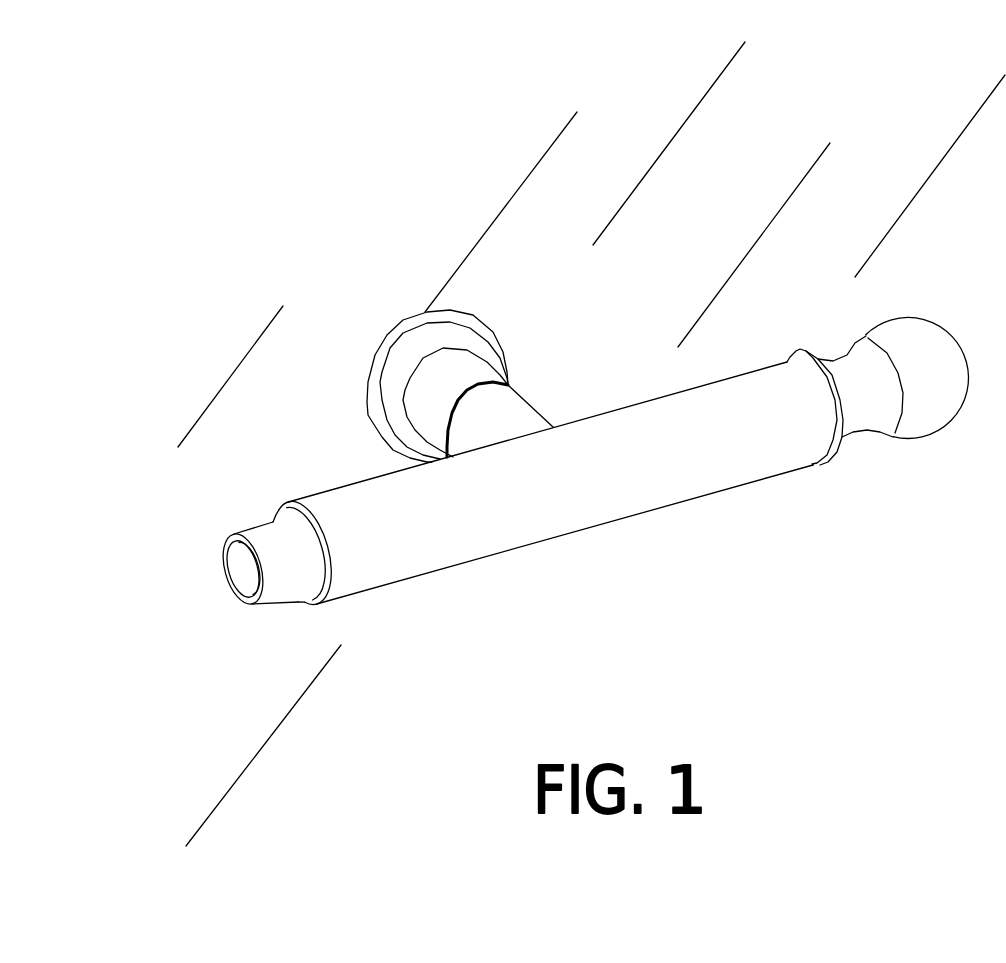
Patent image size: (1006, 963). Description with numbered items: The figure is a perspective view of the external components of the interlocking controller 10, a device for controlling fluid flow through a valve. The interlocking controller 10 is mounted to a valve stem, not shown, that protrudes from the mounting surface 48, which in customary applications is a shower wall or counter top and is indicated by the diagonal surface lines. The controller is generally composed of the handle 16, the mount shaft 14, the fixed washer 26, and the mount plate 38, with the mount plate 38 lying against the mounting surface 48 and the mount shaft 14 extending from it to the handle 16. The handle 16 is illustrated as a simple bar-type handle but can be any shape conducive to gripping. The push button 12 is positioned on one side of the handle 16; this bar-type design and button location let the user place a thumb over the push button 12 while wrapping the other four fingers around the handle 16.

The interlocking controller 10 is at (554, 519).
The push button 12 is at (283, 557).
The mount shaft 14 is at (503, 428).
The handle 16 is at (722, 445).
The fixed washer 26 is at (428, 402).
The mount plate 38 is at (382, 362).
The mounting surface 48 is at (407, 262).